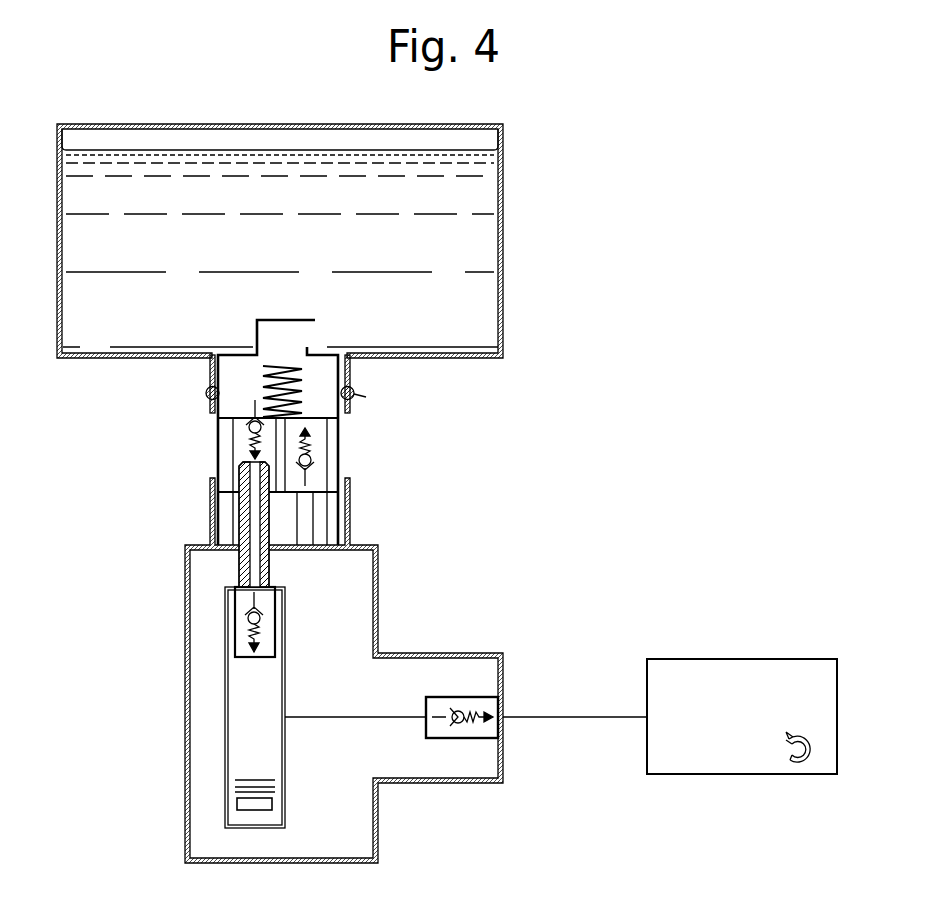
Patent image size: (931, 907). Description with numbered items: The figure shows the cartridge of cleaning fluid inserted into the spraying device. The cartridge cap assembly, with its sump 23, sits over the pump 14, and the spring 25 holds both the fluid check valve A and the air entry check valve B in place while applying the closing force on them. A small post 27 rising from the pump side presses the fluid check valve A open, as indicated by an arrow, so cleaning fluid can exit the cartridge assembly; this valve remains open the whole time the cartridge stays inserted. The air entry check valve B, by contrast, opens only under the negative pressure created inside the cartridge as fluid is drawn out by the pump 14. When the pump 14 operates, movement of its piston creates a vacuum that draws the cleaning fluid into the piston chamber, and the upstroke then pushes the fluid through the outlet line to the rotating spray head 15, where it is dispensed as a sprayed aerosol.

The pump 14 is at (378, 581).
The spray head 15 is at (796, 667).
The sump 23 is at (317, 375).
The spring 25 is at (262, 367).
The post 27 is at (245, 510).
The fluid check valve A is at (249, 434).
The air entry check valve B is at (311, 448).